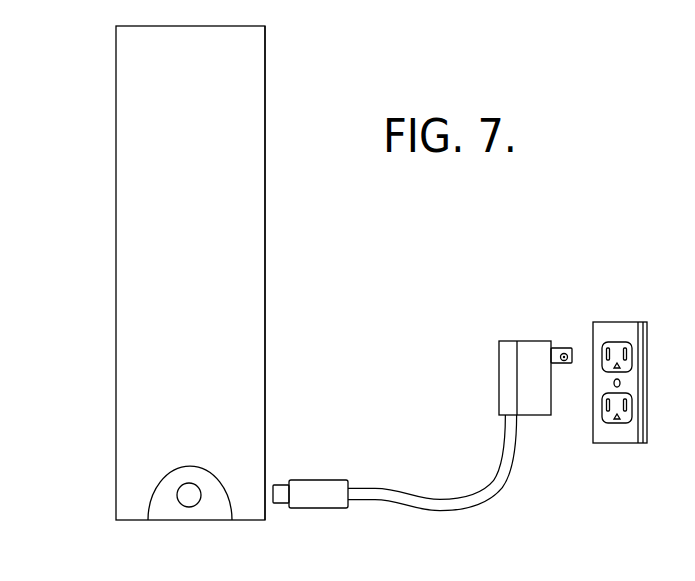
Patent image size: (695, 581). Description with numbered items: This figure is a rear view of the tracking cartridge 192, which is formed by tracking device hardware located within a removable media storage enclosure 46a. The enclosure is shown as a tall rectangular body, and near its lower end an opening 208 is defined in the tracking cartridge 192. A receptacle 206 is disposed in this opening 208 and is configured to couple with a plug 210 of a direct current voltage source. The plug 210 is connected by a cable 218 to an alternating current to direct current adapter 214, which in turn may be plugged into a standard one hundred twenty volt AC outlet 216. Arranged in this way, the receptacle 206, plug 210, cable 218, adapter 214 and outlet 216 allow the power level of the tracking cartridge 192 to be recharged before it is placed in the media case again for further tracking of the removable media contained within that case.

The tracking cartridge 192 is at (110, 38).
The removable media storage enclosure 46a is at (253, 104).
The opening 208 is at (160, 482).
The receptacle 206 is at (189, 507).
The plug 210 is at (318, 480).
The cable 218 is at (457, 509).
The AC to DC adapter 214 is at (528, 340).
The outlet 216 is at (617, 322).